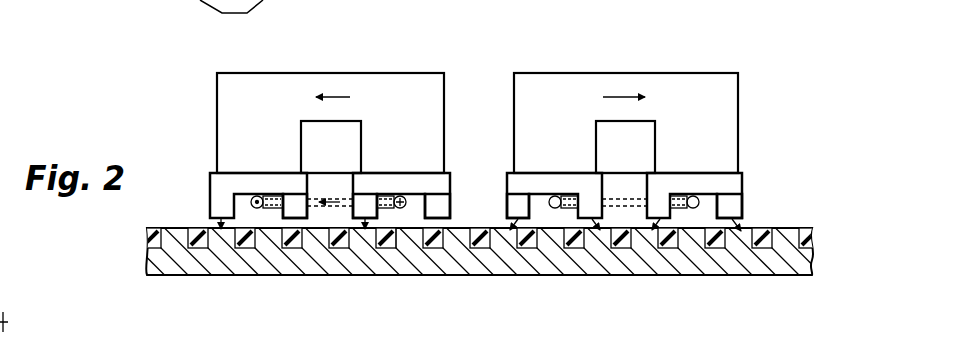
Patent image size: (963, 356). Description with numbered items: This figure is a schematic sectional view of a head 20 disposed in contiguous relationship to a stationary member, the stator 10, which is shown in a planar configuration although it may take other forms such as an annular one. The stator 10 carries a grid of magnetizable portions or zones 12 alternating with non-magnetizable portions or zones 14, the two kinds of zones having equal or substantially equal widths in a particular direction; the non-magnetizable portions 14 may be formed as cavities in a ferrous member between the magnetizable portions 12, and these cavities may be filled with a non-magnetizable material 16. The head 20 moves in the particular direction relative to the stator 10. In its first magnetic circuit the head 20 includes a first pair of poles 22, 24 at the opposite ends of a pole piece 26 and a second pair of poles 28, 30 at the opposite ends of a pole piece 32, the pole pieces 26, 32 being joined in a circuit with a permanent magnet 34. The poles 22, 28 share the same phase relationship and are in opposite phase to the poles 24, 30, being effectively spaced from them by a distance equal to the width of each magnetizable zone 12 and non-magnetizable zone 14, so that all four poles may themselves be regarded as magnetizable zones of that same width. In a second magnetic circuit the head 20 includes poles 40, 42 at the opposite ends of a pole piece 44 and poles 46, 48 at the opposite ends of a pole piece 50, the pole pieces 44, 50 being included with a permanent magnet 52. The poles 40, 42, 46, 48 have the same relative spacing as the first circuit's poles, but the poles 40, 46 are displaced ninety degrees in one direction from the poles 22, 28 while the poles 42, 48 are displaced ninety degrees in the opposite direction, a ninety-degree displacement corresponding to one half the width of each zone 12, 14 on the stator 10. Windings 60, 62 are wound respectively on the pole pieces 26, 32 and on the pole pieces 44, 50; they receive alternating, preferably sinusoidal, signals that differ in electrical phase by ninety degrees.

The stator 10 is at (488, 292).
The magnetizable portions or zones 12 is at (362, 243).
The non-magnetizable portions or zones 14 is at (392, 249).
The non-magnetizable material 16 is at (530, 250).
The head 20 is at (484, 58).
The pole 22 is at (210, 193).
The pole 24 is at (287, 220).
The pole piece 26 is at (288, 192).
The pole 28 is at (358, 193).
The pole 30 is at (462, 214).
The pole piece 32 is at (432, 182).
The permanent magnet 34 is at (228, 73).
The pole 40 is at (507, 196).
The pole 42 is at (586, 192).
The pole piece 44 is at (521, 176).
The pole 46 is at (638, 200).
The pole 48 is at (745, 204).
The pole piece 50 is at (707, 182).
The permanent magnet 52 is at (695, 80).
The winding 60 is at (254, 197).
The winding 62 is at (553, 196).